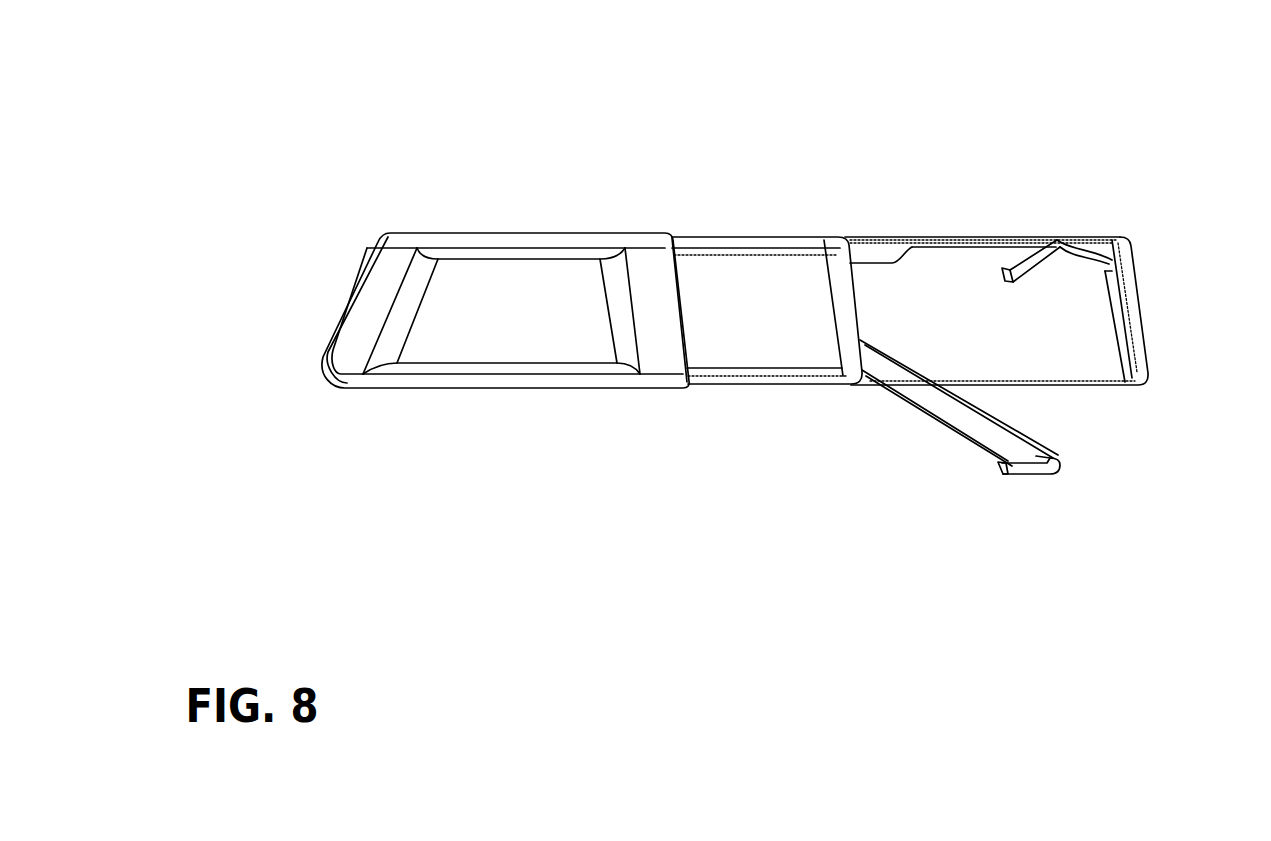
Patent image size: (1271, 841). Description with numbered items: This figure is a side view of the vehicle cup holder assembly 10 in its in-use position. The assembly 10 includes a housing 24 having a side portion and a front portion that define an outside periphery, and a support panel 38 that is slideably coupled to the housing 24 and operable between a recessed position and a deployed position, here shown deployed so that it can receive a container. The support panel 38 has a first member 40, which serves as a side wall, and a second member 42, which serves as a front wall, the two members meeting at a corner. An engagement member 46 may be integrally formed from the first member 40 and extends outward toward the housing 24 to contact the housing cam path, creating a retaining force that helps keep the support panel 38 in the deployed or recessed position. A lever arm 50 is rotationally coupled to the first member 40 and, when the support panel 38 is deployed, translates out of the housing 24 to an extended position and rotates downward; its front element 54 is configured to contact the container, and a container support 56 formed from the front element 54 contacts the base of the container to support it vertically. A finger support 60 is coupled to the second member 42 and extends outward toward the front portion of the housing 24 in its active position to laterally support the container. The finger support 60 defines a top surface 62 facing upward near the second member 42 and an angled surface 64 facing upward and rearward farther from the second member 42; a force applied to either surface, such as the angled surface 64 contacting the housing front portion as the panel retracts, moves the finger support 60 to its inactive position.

The vehicle cup holder assembly 10 is at (1106, 133).
The housing 24 is at (716, 390).
The support panel 38 is at (1147, 328).
The first member 40 is at (943, 247).
The second member 42 is at (1132, 283).
The engagement member 46 is at (870, 236).
The lever arm 50 is at (895, 375).
The front element 54 is at (1062, 463).
The container support 56 is at (1002, 473).
The finger support 60 is at (1115, 236).
The top surface 62 is at (1068, 238).
The angled surface 64 is at (1003, 266).